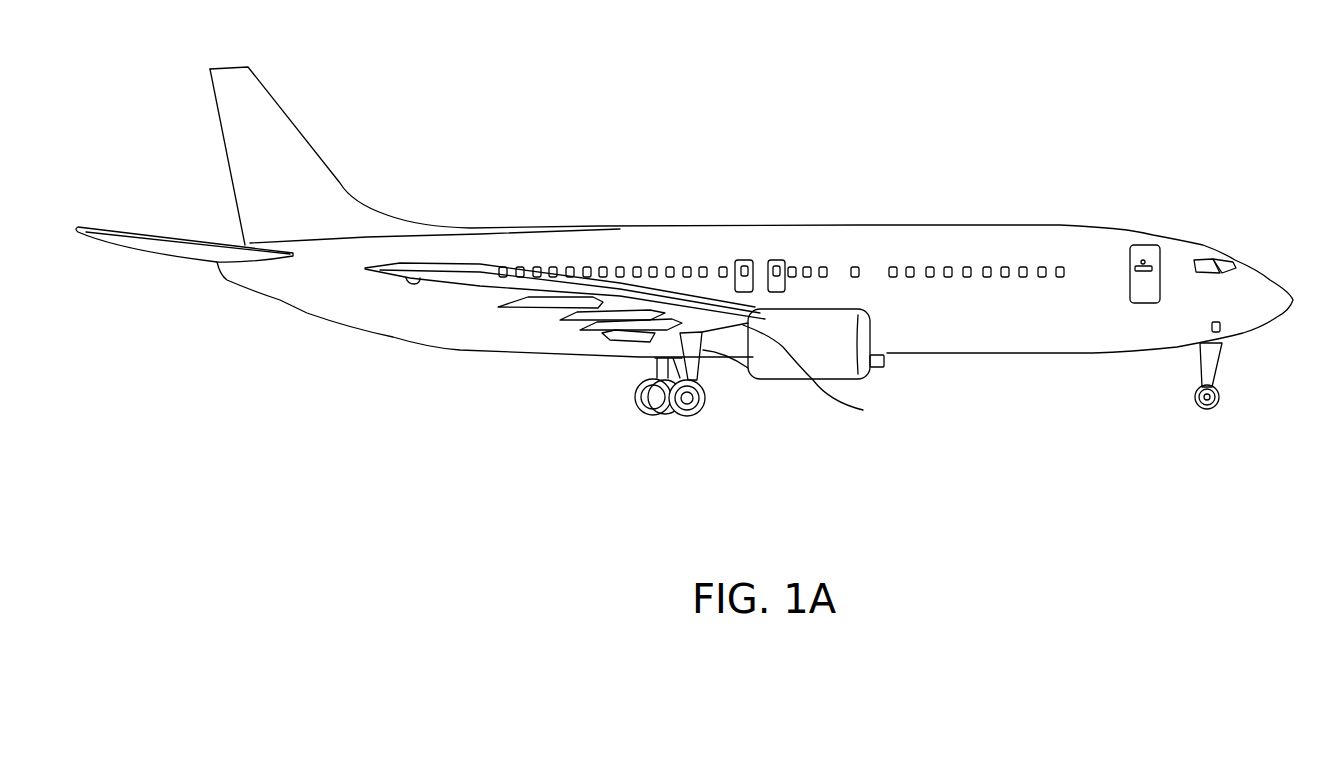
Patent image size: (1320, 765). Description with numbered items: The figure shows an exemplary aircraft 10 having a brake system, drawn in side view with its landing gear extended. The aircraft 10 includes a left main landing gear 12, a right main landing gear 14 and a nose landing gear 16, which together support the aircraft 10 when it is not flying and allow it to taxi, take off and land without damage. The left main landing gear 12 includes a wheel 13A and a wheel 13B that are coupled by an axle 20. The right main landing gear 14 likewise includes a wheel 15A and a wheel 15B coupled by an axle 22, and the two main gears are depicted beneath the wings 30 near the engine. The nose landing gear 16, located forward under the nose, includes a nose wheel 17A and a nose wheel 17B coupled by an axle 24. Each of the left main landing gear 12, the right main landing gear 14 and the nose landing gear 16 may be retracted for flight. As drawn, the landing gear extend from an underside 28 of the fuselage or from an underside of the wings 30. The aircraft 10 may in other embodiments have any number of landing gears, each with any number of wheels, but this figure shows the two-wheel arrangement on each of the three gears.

The aircraft 10 is at (867, 128).
The left main landing gear 12 is at (643, 375).
The wheel 13A is at (647, 379).
The wheel 13B is at (655, 408).
The right main landing gear 14 is at (681, 441).
The wheel 15A is at (701, 397).
The wheel 15B is at (665, 415).
The nose landing gear 16 is at (1210, 404).
The nose wheel 17A is at (1195, 398).
The nose wheel 17B is at (1218, 398).
The axle 20 is at (642, 402).
The axle 22 is at (701, 427).
The axle 24 is at (1210, 405).
The underside of the fuselage 28 is at (1195, 350).
The wings 30 is at (798, 365).